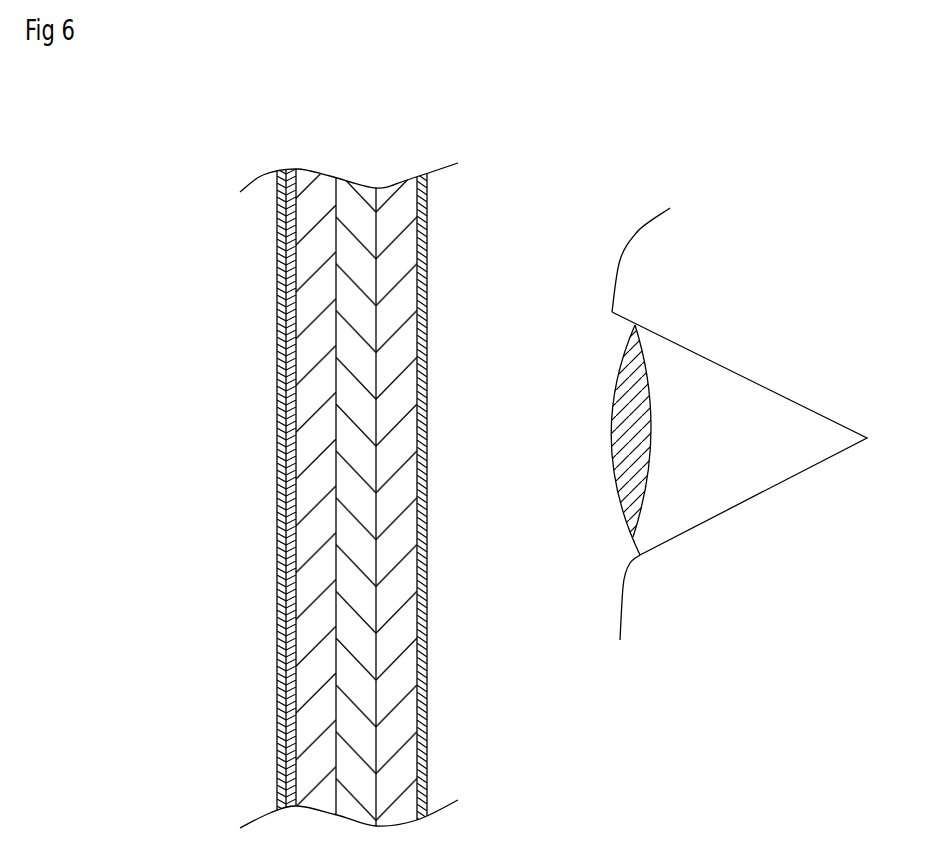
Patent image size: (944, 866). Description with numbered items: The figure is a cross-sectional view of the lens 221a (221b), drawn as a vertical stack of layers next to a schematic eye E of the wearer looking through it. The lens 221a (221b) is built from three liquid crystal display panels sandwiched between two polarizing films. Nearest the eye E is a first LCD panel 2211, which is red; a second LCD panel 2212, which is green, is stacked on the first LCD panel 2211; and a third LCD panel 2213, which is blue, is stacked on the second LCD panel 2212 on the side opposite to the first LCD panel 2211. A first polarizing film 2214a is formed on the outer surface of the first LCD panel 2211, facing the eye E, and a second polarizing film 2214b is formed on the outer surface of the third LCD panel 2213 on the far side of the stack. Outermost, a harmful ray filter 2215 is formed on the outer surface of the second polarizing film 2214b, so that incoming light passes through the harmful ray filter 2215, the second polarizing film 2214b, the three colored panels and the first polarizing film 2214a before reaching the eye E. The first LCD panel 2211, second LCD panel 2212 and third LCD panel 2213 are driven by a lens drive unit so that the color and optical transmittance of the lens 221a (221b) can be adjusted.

The lens 221a is at (250, 337).
The lens 221b is at (329, 500).
The first LCD panel 2211 is at (398, 537).
The second LCD panel 2212 is at (358, 685).
The third LCD panel 2213 is at (317, 722).
The first polarizing film 2214a is at (427, 387).
The second polarizing film 2214b is at (280, 630).
The harmful ray filter 2215 is at (278, 473).
The eye of viewer E is at (715, 473).